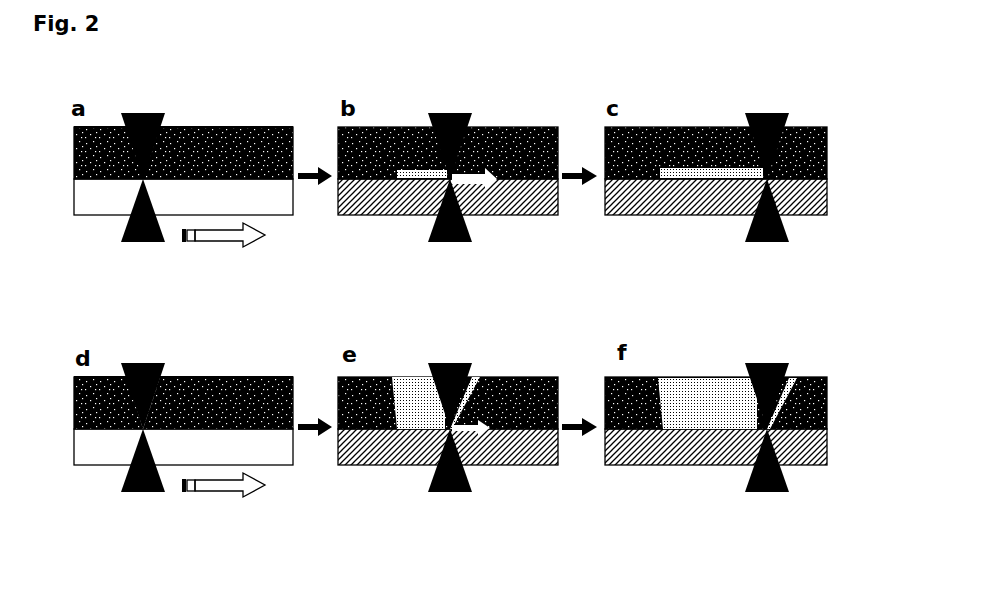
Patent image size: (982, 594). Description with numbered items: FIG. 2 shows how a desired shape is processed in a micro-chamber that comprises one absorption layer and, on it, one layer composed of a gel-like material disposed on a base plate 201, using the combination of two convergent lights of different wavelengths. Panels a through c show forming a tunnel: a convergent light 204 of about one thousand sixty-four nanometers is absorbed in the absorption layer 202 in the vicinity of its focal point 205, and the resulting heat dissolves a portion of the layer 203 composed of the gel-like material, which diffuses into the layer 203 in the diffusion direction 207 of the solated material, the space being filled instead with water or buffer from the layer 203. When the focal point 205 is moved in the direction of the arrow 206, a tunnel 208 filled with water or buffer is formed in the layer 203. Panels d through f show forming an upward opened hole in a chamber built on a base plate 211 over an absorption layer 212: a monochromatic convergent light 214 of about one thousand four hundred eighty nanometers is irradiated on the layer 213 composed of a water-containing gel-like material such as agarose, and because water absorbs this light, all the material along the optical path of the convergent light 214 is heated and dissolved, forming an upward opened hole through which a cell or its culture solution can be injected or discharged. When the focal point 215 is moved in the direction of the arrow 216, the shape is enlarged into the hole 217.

The substrate 201 is at (98, 202).
The absorption layer 202 is at (290, 150).
The layer composed of a gel-like material 203 is at (217, 127).
The convergent light 204 is at (142, 240).
The focal point of a convergent light 205 is at (145, 175).
The movement direction of a convergent light 206 is at (213, 240).
The diffusion direction of a solated material 207 is at (375, 127).
The tunnel 208 is at (693, 128).
The substrate 211 is at (97, 455).
The recording layer 212 is at (290, 398).
The layer composed of a gel-like material 213 is at (215, 377).
The convergent light 214 is at (138, 492).
The focal point of a convergent light 215 is at (145, 425).
The movement direction of a convergent light 216 is at (212, 490).
The hole 217 is at (723, 410).